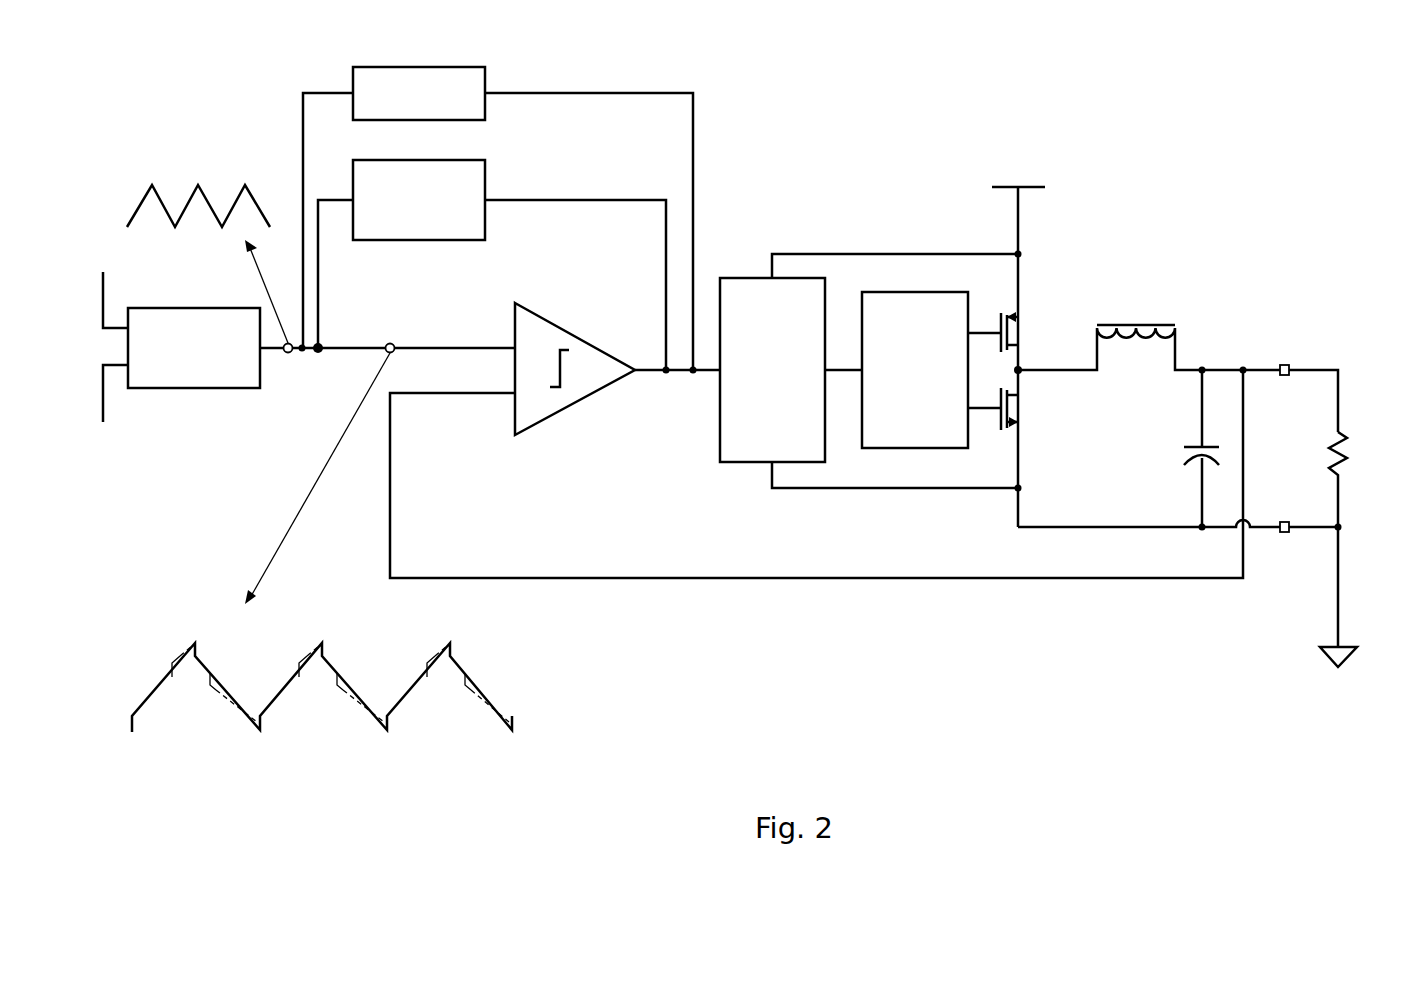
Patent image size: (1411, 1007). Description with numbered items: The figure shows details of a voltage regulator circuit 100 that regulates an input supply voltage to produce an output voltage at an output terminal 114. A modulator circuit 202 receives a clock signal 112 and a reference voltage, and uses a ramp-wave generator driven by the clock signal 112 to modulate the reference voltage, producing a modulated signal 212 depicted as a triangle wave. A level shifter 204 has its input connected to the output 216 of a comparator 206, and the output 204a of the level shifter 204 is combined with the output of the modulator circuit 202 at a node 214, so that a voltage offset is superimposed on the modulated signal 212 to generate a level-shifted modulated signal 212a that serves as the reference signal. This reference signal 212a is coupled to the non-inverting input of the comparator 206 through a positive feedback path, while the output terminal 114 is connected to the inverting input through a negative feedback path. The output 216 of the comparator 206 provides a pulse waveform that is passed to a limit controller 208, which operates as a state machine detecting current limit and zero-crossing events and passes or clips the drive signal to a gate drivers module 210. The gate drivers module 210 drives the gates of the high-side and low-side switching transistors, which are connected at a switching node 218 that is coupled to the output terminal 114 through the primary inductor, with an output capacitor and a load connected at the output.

The voltage regulator circuit 100 is at (955, 93).
The clock signal 112 is at (98, 287).
The output terminal 114 is at (1313, 362).
The modulator circuit 202 is at (194, 348).
The level shifter 204 is at (419, 200).
The output of the level shifter 204a is at (320, 278).
The comparator 206 is at (513, 331).
The limit controller 208 is at (772, 370).
The gate drivers module 210 is at (915, 370).
The modulated signal 212 is at (126, 206).
The level-shifted modulated signal 212a is at (515, 691).
The node 214 is at (321, 346).
The output of comparator 216 is at (666, 374).
The switching node 218 is at (1022, 372).